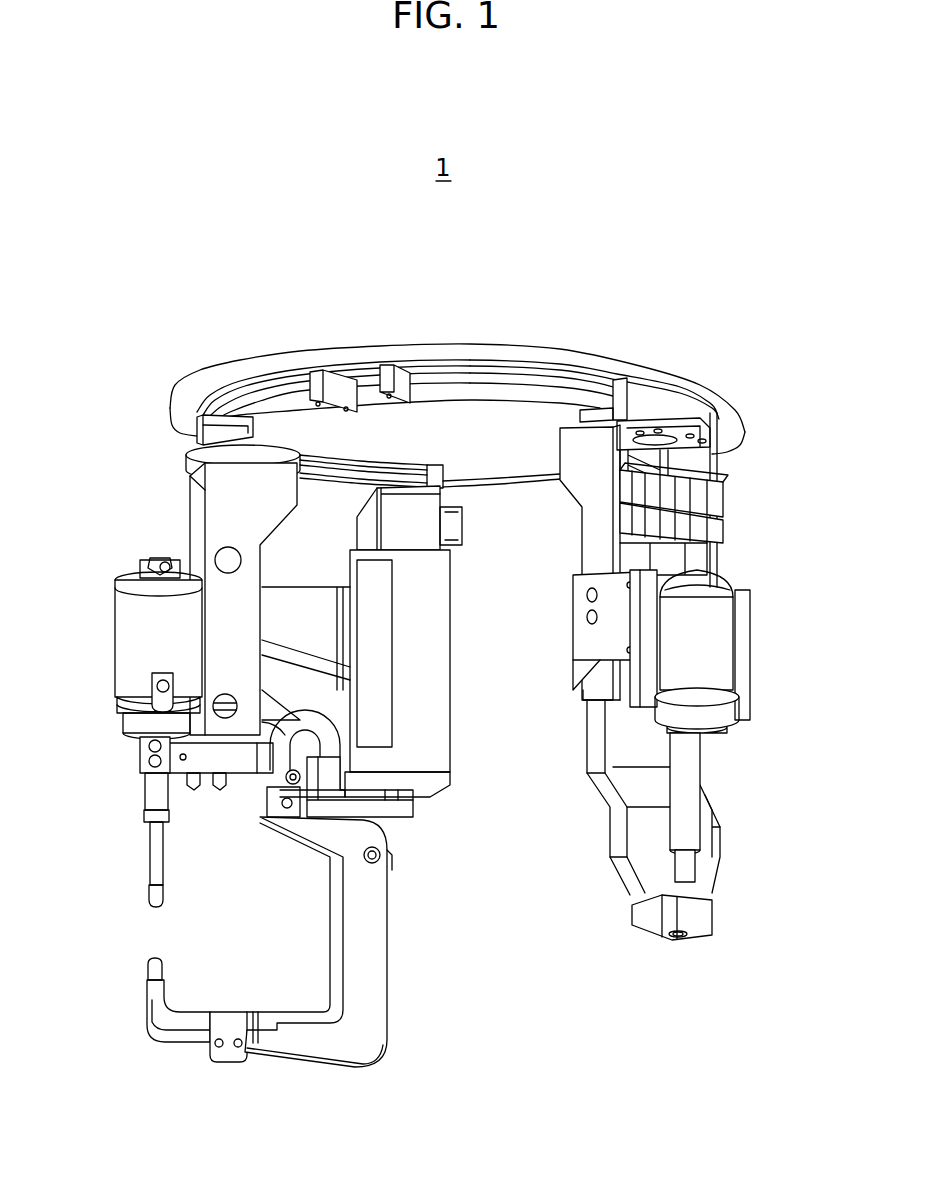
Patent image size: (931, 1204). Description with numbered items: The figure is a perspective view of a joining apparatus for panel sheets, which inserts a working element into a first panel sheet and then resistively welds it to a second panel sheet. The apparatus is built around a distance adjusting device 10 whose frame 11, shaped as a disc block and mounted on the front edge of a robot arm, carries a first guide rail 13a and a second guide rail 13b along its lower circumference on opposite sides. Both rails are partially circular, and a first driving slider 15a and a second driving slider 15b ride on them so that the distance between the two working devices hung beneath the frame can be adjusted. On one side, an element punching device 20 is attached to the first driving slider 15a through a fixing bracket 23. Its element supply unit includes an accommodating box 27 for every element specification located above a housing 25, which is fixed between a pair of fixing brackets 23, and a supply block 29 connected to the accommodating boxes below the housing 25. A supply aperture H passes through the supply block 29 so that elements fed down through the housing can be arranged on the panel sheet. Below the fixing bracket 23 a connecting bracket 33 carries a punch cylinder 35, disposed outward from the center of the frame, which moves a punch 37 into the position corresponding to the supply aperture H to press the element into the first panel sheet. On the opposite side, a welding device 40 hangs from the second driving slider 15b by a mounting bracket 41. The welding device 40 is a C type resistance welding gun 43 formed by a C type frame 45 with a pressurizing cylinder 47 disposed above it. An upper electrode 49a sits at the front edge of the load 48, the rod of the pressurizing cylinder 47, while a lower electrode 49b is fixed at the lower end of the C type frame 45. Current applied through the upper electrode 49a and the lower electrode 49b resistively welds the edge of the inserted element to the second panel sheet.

The distance adjusting device 10 is at (211, 367).
The frame 11 is at (362, 350).
The first guide rail 13a is at (462, 390).
The second guide rail 13b is at (277, 403).
The first driving slider 15a is at (660, 395).
The second driving slider 15b is at (200, 430).
The element punching device 20 is at (678, 706).
The fixing bracket 23 is at (588, 525).
The housing 25 is at (700, 555).
The accommodating box 27 is at (717, 493).
The supply block 29 is at (705, 915).
The connecting bracket 33 is at (608, 640).
The punch cylinder 35 is at (718, 623).
The punch 37 is at (683, 863).
The welding device 40 is at (260, 756).
The mounting bracket 41 is at (218, 510).
The resistance welding gun 43 is at (361, 918).
The C type frame 45 is at (375, 965).
The pressurizing cylinder 47 is at (117, 633).
The load 48 is at (147, 808).
The upper electrode 49a is at (150, 897).
The lower electrode 49b is at (150, 968).
The supply aperture H is at (680, 940).